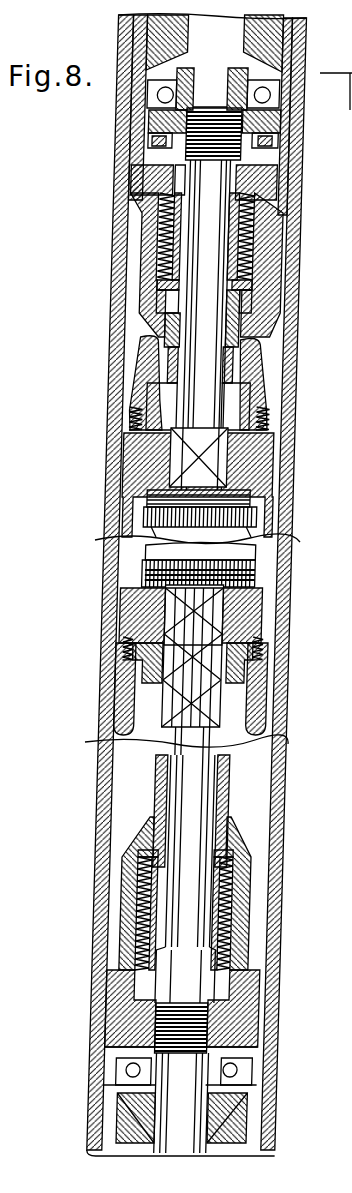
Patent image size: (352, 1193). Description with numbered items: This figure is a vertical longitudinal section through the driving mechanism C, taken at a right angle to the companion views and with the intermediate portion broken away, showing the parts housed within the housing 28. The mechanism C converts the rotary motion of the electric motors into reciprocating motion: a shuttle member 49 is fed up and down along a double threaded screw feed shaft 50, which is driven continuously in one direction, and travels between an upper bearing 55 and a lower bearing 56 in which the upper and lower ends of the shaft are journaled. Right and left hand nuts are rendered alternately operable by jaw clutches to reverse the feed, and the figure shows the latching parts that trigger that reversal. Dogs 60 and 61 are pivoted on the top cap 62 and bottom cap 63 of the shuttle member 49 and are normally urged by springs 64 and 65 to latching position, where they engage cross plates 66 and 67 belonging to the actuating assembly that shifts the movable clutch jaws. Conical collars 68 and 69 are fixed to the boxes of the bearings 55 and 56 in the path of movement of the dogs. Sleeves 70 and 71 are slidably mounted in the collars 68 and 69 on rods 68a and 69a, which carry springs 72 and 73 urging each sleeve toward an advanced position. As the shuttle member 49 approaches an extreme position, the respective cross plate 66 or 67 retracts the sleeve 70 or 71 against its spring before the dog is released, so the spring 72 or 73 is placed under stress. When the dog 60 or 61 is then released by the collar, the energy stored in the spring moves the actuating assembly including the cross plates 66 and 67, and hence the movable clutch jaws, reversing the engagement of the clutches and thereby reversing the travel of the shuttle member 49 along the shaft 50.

The housing 28 is at (115, 292).
The upper bearing 55 is at (140, 176).
The conical collar 68 is at (262, 277).
The rod 68a is at (263, 223).
The spring 72 is at (247, 252).
The sleeve 70 is at (250, 305).
The dog 60 is at (262, 362).
The cross plate 66 is at (267, 390).
The spring 64 is at (265, 423).
The top cap 62 is at (253, 467).
The driving mechanism C is at (267, 503).
The shuttle member 49 is at (272, 527).
The bottom cap 63 is at (250, 622).
The double threaded screw feed shaft 50 is at (220, 613).
The spring 65 is at (267, 657).
The cross plate 67 is at (247, 683).
The dog 61 is at (265, 715).
The sleeve 71 is at (225, 788).
The conical collar 69 is at (245, 847).
The rod 69a is at (230, 897).
The spring 73 is at (232, 925).
The lower bearing 56 is at (112, 987).